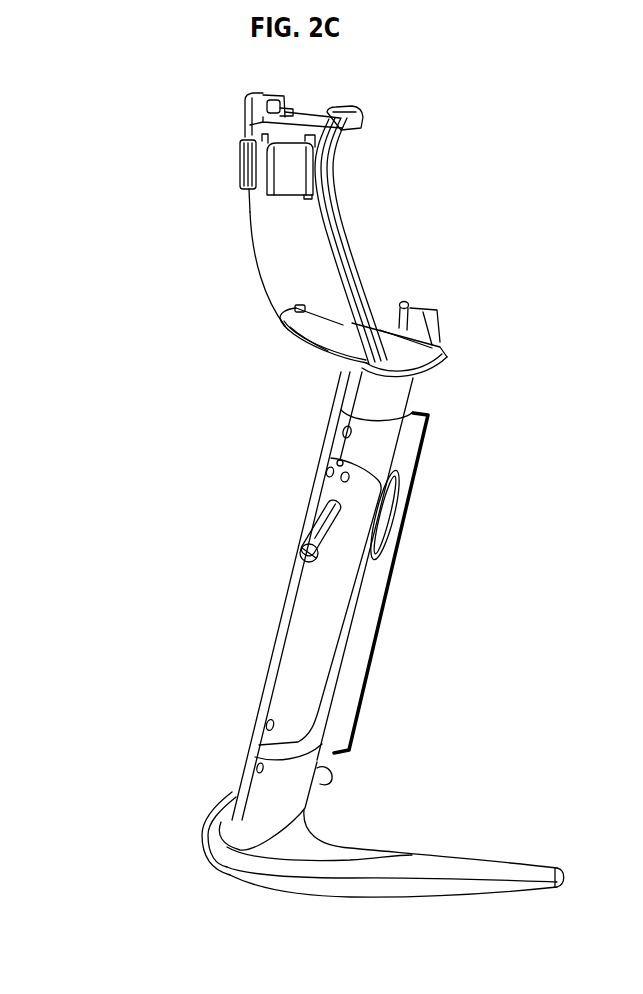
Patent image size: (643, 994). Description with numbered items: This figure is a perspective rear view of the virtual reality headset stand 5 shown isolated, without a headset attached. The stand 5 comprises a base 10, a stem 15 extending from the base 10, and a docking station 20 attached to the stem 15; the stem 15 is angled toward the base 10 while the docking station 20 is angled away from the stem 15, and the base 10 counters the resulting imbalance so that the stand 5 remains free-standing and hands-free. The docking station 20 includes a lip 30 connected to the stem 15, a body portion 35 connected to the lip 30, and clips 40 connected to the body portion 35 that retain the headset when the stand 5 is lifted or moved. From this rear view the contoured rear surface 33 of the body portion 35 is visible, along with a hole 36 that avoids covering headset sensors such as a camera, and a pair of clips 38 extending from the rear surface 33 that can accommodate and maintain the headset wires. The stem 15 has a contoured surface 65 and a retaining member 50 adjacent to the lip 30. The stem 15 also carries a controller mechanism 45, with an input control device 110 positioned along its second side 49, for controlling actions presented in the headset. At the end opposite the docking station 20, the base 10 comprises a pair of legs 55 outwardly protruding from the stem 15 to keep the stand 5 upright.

The virtual reality headset stand 5 is at (99, 201).
The base 10 is at (219, 874).
The stem 15 is at (241, 779).
The docking station 20 is at (349, 272).
The lip 30 is at (447, 357).
The contoured rear surface 33 is at (307, 265).
The body portion 35 is at (258, 277).
The hole 36 is at (316, 318).
The clips 38 is at (241, 165).
The clip 40 is at (278, 103).
The controller mechanism 45 is at (389, 595).
The second side 49 is at (292, 616).
The retaining member 50 is at (426, 306).
The legs 55 is at (322, 779).
The contoured surface 65 is at (328, 644).
The input control device 110 is at (305, 539).